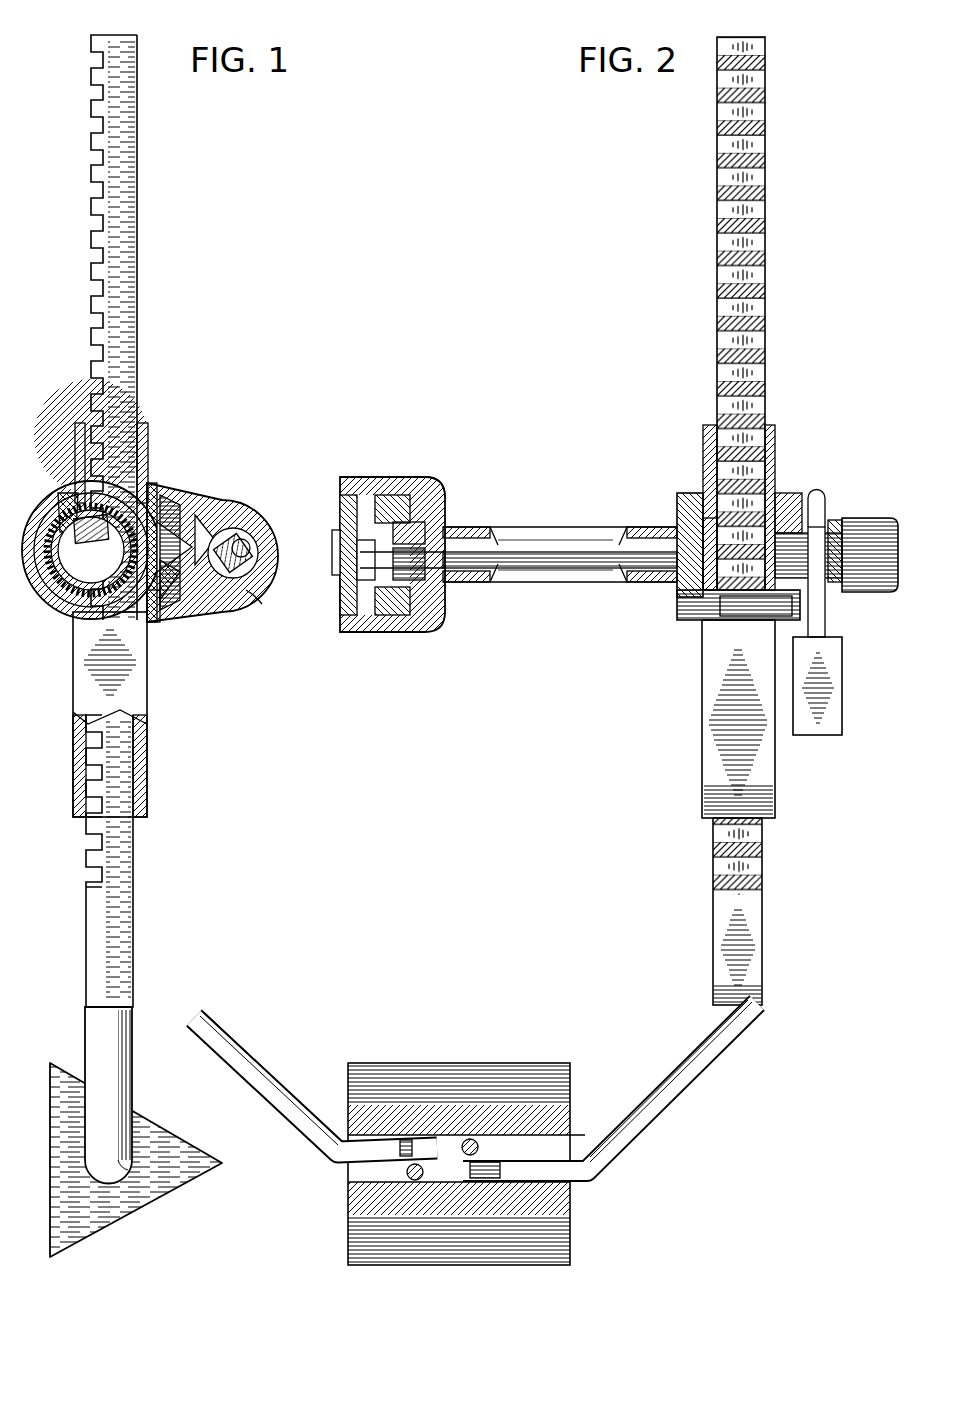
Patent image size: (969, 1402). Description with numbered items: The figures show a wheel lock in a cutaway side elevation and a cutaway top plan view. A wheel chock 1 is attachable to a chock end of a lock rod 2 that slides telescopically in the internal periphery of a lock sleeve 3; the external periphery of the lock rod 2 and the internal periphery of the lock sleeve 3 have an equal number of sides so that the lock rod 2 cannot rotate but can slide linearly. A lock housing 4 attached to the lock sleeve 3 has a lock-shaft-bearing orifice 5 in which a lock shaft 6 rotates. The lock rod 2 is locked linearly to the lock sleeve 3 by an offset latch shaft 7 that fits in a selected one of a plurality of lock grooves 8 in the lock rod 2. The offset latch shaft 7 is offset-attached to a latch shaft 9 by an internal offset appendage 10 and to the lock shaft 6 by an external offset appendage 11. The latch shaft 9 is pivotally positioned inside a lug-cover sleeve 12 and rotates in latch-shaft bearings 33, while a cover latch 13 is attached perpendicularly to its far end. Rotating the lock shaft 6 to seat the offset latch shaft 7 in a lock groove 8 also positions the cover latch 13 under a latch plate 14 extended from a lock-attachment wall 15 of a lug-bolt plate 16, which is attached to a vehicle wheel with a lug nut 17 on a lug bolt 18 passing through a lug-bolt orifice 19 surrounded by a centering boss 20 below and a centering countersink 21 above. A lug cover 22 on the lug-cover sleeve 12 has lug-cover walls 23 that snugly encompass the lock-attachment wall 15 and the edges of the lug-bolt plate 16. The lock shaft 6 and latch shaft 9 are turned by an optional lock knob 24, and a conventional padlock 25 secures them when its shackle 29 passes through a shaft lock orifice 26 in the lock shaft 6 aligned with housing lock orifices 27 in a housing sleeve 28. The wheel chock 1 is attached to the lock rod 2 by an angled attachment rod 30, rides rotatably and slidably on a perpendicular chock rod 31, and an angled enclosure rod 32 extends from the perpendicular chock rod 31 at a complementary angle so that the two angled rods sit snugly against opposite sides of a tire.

In FIG. 1, the wheel chock 1 is at (115, 1227).
In FIG. 2, the wheel chock 1 is at (570, 1240).
In FIG. 1, the lock rod 2 is at (138, 133).
In FIG. 2, the lock rod 2 is at (717, 134).
In FIG. 1, the lock sleeve 3 is at (120, 700).
In FIG. 2, the lock sleeve 3 is at (725, 740).
In FIG. 1, the lock housing 4 is at (152, 610).
In FIG. 2, the lock housing 4 is at (740, 606).
In FIG. 2, the lock-shaft-bearing orifice 5 is at (816, 500).
In FIG. 1, the lock shaft 6 is at (52, 598).
In FIG. 2, the lock shaft 6 is at (822, 548).
In FIG. 2, the offset latch shaft 7 is at (690, 520).
In FIG. 1, the lock grooves 8 is at (80, 432).
In FIG. 2, the lock grooves 8 is at (730, 435).
In FIG. 2, the latch shaft 9 is at (605, 560).
In FIG. 2, the internal offset appendage 10 is at (640, 535).
In FIG. 1, the external offset appendage 11 is at (62, 522).
In FIG. 2, the external offset appendage 11 is at (790, 510).
In FIG. 2, the lug-cover sleeve 12 is at (555, 545).
In FIG. 2, the cover latch 13 is at (348, 615).
In FIG. 2, the latch plate 14 is at (405, 582).
In FIG. 2, the lock-attachment wall 15 is at (370, 598).
In FIG. 1, the lug-bolt plate 16 is at (205, 500).
In FIG. 2, the lug-bolt plate 16 is at (336, 596).
In FIG. 1, the lug nut 17 is at (214, 598).
In FIG. 1, the lug bolt 18 is at (242, 585).
In FIG. 1, the lug-bolt orifice 19 is at (222, 535).
In FIG. 2, the centering boss 20 is at (333, 542).
In FIG. 1, the centering countersink 21 is at (250, 525).
In FIG. 1, the lug cover 22 is at (170, 520).
In FIG. 2, the lug cover 22 is at (440, 520).
In FIG. 1, the lug-cover walls 23 is at (262, 598).
In FIG. 2, the lug-cover walls 23 is at (375, 490).
In FIG. 1, the lock knob 24 is at (180, 575).
In FIG. 2, the lock knob 24 is at (888, 593).
In FIG. 2, the padlock 25 is at (820, 728).
In FIG. 2, the shaft lock orifice 26 is at (706, 598).
In FIG. 2, the housing lock orifices 27 is at (840, 560).
In FIG. 2, the housing sleeve 28 is at (745, 605).
In FIG. 2, the shackle 29 is at (826, 628).
In FIG. 1, the angled attachment rod 30 is at (132, 1078).
In FIG. 2, the angled attachment rod 30 is at (665, 1060).
In FIG. 2, the perpendicular chock rod 31 is at (470, 1190).
In FIG. 2, the angled enclosure rod 32 is at (240, 1050).
In FIG. 2, the latch-shaft bearings 33 is at (408, 522).